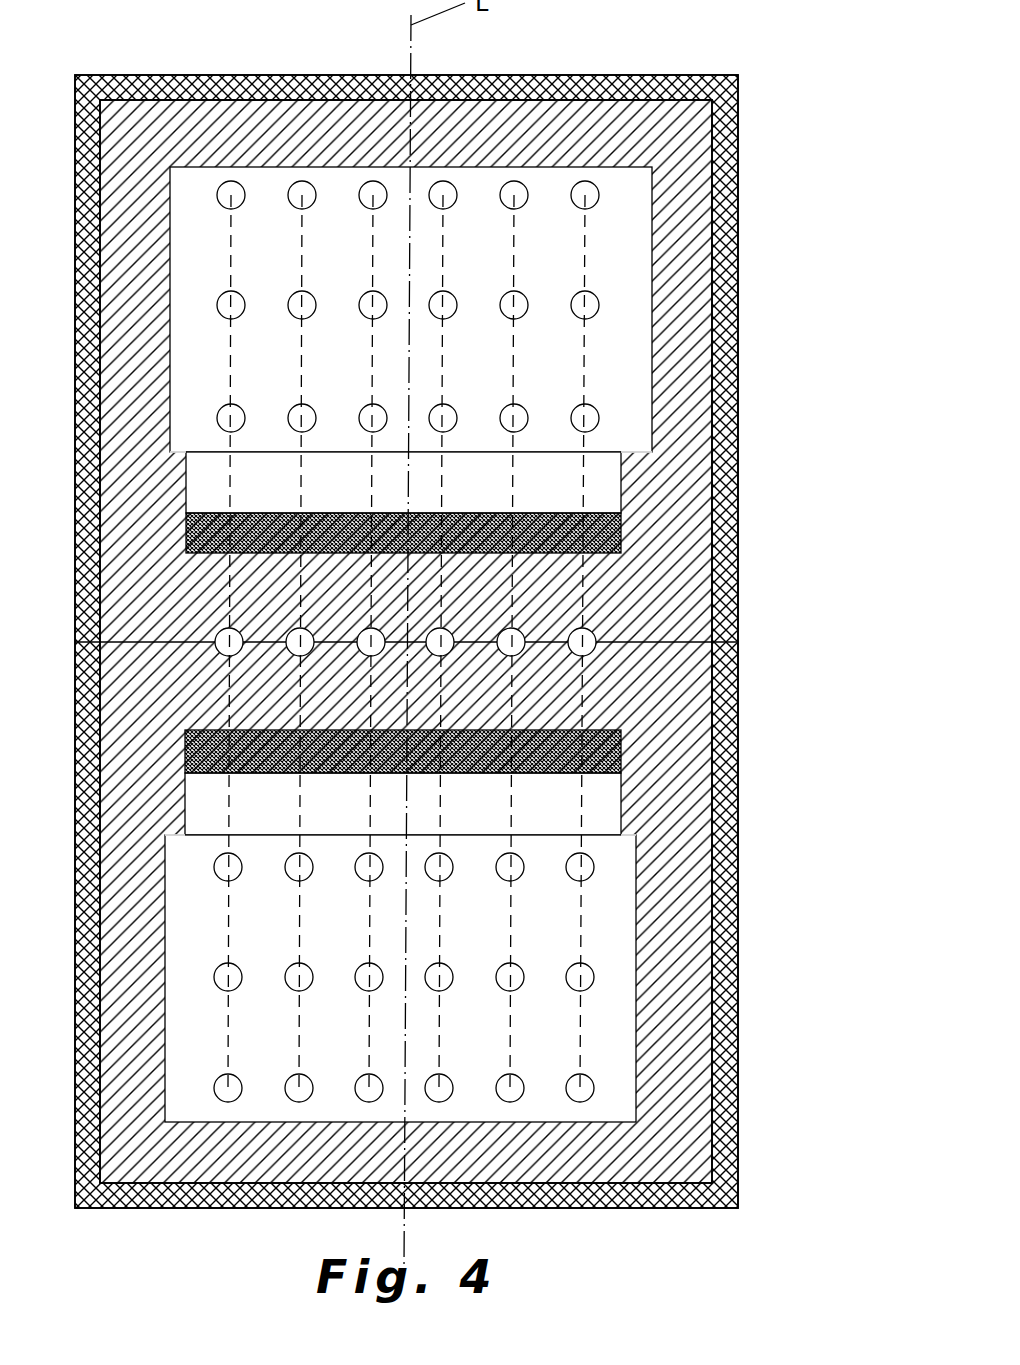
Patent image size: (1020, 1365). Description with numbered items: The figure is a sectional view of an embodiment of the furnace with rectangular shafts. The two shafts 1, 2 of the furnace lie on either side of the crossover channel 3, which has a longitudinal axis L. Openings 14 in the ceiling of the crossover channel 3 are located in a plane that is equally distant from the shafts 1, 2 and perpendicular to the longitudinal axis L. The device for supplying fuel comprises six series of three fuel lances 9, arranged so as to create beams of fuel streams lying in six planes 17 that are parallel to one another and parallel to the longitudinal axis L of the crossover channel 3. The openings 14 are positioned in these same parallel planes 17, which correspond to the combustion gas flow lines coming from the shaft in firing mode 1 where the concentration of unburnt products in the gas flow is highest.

The shaft 1 is at (731, 841).
The shaft 2 is at (737, 433).
The crossover channel 3 is at (67, 453).
The fuel lance 9 is at (601, 193).
The opening 14 is at (596, 634).
The plane 17 is at (587, 497).